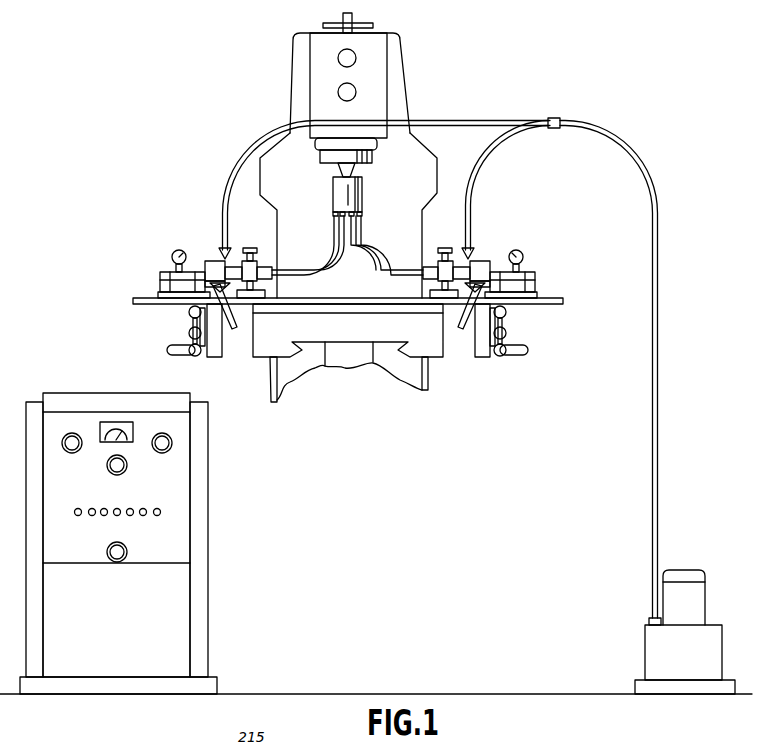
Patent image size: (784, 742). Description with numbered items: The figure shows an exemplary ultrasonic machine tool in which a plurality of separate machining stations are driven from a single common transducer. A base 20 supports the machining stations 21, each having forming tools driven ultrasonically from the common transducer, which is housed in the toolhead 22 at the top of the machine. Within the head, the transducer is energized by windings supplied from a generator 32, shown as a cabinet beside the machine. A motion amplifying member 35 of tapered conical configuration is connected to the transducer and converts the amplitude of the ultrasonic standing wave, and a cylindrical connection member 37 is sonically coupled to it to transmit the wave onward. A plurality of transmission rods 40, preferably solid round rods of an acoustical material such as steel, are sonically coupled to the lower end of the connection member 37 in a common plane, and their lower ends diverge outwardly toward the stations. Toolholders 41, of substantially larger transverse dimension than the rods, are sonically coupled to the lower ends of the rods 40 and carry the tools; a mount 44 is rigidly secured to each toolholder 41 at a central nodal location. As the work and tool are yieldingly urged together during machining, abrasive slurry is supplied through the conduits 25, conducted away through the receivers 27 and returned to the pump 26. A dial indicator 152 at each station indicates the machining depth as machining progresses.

The base 20 is at (415, 370).
The machining station 21 is at (207, 246).
The toolhead 22 is at (378, 86).
The conduit 25 is at (221, 222).
The pump 26 is at (690, 602).
The receiver 27 is at (216, 288).
The generator 32 is at (173, 544).
The motion amplifying member 35 is at (352, 172).
The connection member 37 is at (362, 196).
The transmission rod 40 is at (360, 230).
The toolholder 41 is at (236, 266).
The mount 44 is at (256, 262).
The dial indicator 152 is at (172, 255).